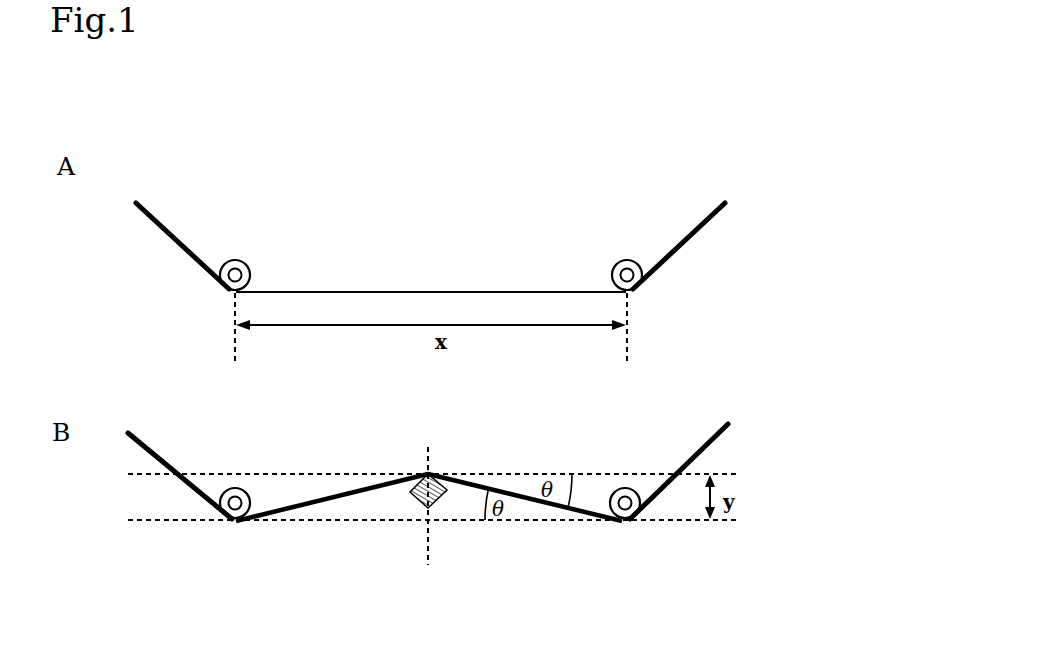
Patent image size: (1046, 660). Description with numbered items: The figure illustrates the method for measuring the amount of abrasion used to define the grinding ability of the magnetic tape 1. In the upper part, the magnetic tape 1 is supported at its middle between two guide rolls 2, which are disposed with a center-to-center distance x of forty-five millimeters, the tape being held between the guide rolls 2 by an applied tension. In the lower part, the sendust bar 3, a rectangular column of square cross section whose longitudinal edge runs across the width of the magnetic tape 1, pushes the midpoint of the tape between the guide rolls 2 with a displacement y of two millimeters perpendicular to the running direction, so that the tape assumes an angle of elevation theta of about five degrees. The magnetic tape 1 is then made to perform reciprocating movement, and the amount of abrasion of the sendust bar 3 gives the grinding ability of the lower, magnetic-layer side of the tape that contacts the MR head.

The magnetic tape 1 is at (402, 292).
The guide rolls 2 is at (219, 284).
The sendust bar 3 is at (442, 495).